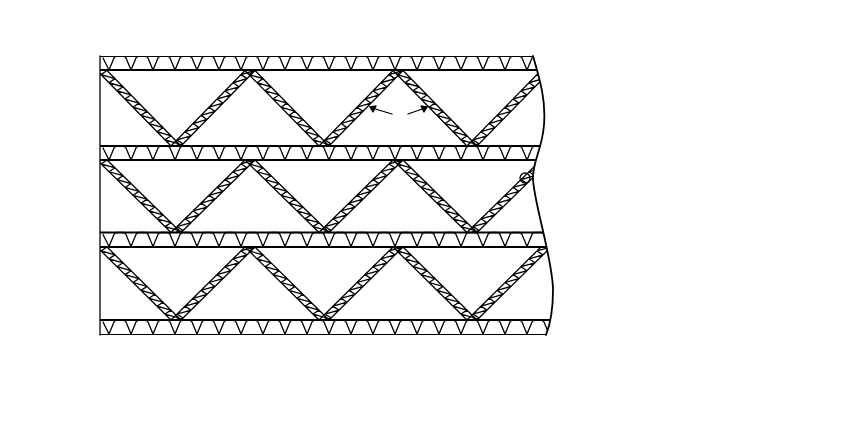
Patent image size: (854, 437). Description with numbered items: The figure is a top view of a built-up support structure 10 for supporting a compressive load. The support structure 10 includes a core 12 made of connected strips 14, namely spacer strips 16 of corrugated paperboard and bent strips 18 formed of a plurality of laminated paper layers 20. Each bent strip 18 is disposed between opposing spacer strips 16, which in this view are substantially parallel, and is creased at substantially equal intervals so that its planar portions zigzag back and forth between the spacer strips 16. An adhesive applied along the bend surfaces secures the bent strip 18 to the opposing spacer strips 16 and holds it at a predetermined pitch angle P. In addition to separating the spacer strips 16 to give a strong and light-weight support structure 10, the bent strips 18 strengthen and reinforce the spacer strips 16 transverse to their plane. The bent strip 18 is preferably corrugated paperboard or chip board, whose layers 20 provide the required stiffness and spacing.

The support structure 10 is at (303, 24).
The core 12 is at (33, 204).
The connected strips 14 is at (128, 146).
The spacer strips 16 is at (534, 152).
The bent strip 18 is at (536, 264).
The laminated paper layers 20 is at (530, 193).